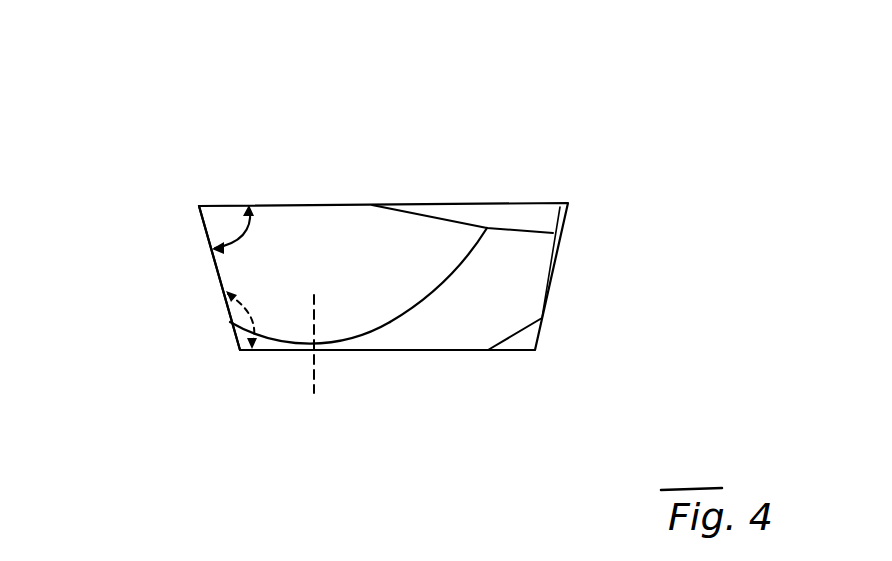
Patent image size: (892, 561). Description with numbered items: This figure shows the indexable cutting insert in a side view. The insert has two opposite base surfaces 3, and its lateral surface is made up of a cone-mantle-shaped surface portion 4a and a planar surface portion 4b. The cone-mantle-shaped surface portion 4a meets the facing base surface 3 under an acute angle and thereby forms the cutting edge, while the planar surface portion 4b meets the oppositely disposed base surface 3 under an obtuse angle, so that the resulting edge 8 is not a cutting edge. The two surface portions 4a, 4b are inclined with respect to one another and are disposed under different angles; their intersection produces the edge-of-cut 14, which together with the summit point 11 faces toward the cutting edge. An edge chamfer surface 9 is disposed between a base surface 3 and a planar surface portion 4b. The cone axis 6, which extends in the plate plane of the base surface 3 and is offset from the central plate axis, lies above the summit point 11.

The base surface 3 is at (422, 204).
The edge 8 is at (285, 206).
The edge chamfer surface 9 is at (545, 220).
The cone-mantle-shaped surface portion 4a is at (497, 283).
The planar surface portion 4b is at (278, 245).
The summit point 11 is at (293, 346).
The edge-of-cut 14 is at (389, 320).
The cone axis 6 is at (314, 393).